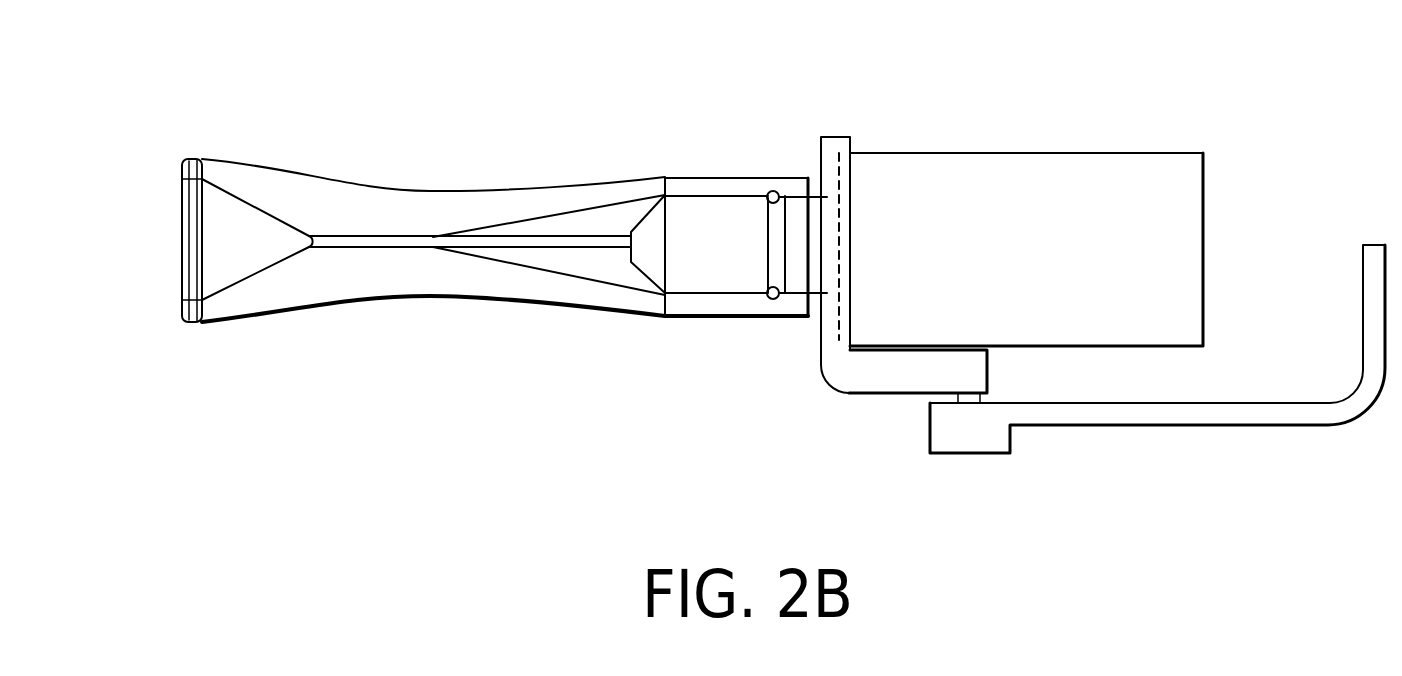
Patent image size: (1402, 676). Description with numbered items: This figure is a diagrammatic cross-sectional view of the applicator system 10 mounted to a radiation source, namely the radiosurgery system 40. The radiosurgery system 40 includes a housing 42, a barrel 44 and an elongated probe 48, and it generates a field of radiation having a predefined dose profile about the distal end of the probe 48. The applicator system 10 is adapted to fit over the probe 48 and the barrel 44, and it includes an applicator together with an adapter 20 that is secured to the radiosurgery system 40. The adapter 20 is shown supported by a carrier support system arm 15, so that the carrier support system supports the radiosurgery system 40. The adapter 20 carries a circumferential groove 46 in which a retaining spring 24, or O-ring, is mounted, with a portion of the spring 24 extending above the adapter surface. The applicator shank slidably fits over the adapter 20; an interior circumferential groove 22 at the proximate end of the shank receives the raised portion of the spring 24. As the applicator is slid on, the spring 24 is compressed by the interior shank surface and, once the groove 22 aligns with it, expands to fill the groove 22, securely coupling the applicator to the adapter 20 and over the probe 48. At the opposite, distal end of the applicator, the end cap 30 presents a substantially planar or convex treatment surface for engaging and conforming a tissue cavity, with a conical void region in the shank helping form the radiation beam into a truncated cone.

The applicator system 10 is at (397, 82).
The carrier support system arm 15 is at (1212, 414).
The adapter 20 is at (833, 375).
The interior circumferential groove 22 is at (764, 148).
The retaining spring 24 is at (775, 301).
The end cap 30 is at (181, 262).
The radiosurgery system 40 is at (1086, 114).
The housing 42 is at (1190, 190).
The barrel 44 is at (705, 232).
The circumferential groove 46 is at (772, 263).
The elongated probe 48 is at (537, 236).